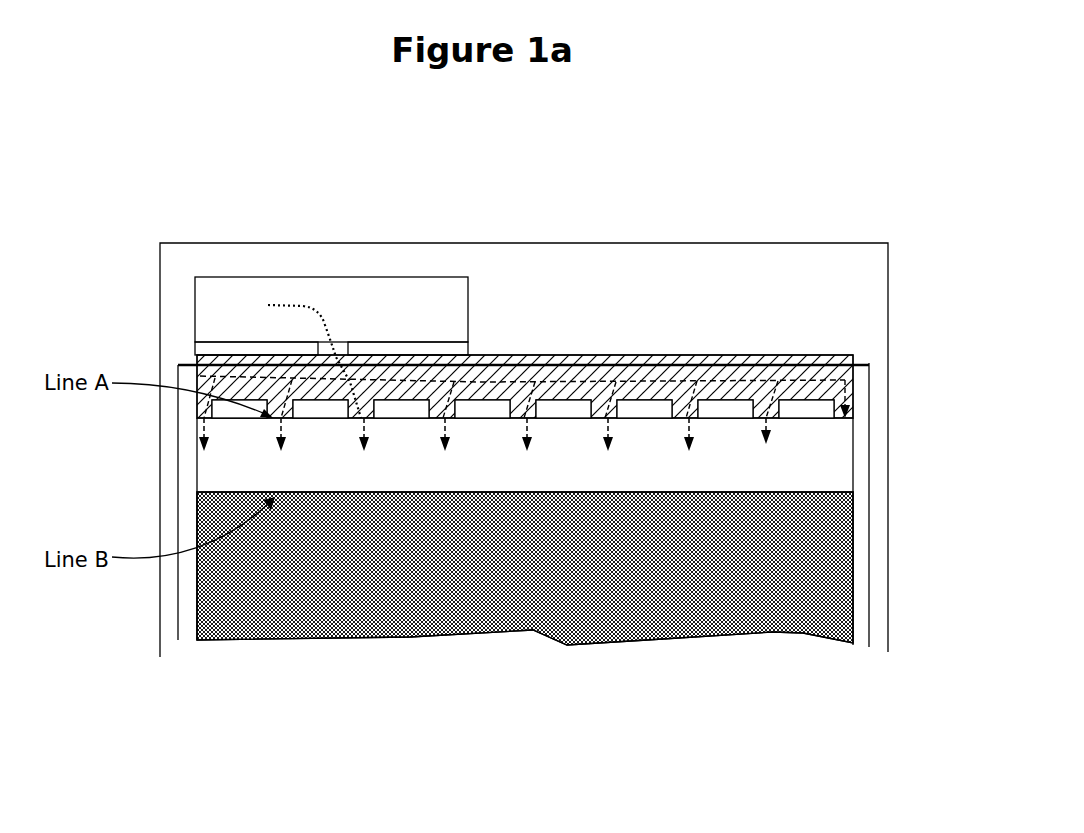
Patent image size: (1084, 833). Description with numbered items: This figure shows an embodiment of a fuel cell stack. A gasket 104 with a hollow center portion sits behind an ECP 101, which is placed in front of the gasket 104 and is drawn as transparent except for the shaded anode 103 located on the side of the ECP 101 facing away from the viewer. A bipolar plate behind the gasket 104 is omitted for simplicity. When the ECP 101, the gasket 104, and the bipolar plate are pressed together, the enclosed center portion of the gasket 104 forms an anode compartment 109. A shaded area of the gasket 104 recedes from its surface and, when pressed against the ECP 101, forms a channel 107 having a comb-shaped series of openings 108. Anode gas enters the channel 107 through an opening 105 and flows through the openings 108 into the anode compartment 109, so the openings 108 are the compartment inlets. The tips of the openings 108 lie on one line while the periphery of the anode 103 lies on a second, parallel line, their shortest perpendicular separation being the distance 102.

The ECP 101 is at (475, 363).
The shortest distance between Line A and Line B 102 is at (173, 495).
The anode 103 is at (513, 591).
The gasket 104 is at (485, 431).
The opening 105 is at (420, 305).
The channel 107 is at (523, 290).
The openings 108 is at (581, 379).
The anode compartment 109 is at (580, 434).